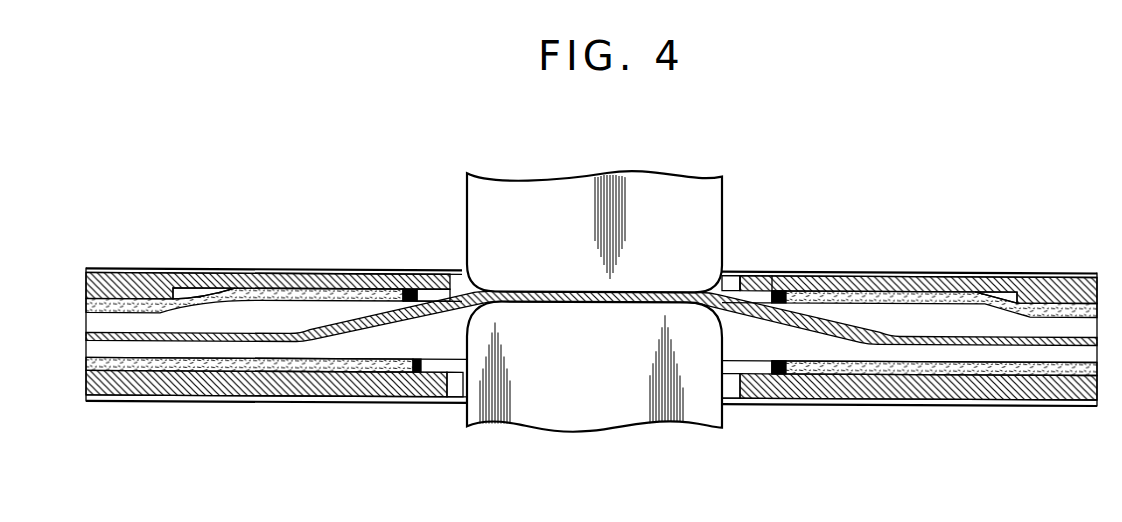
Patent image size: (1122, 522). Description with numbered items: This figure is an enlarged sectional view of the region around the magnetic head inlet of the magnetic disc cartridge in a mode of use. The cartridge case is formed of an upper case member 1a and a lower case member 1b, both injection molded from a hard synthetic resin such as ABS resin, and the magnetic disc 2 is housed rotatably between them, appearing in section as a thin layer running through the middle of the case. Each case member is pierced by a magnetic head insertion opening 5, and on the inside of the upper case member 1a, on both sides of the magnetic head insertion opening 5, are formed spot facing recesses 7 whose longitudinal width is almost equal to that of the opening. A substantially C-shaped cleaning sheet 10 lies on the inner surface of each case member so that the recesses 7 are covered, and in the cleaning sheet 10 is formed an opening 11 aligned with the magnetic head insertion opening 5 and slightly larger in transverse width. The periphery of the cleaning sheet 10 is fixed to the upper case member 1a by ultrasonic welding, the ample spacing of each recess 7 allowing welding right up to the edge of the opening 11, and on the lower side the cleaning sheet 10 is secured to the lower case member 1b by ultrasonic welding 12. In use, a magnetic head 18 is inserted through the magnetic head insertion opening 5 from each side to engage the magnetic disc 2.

The upper case member 1a is at (1072, 272).
The lower case member 1b is at (1035, 392).
The magnetic disc 2 is at (912, 328).
The magnetic head insertion opening 5 is at (727, 276).
The spot facing recess 7 is at (186, 288).
The cleaning sheet 10 is at (276, 289).
The opening 11 is at (433, 278).
The ultrasonic welding 12 is at (403, 285).
The magnetic head 18 is at (553, 182).